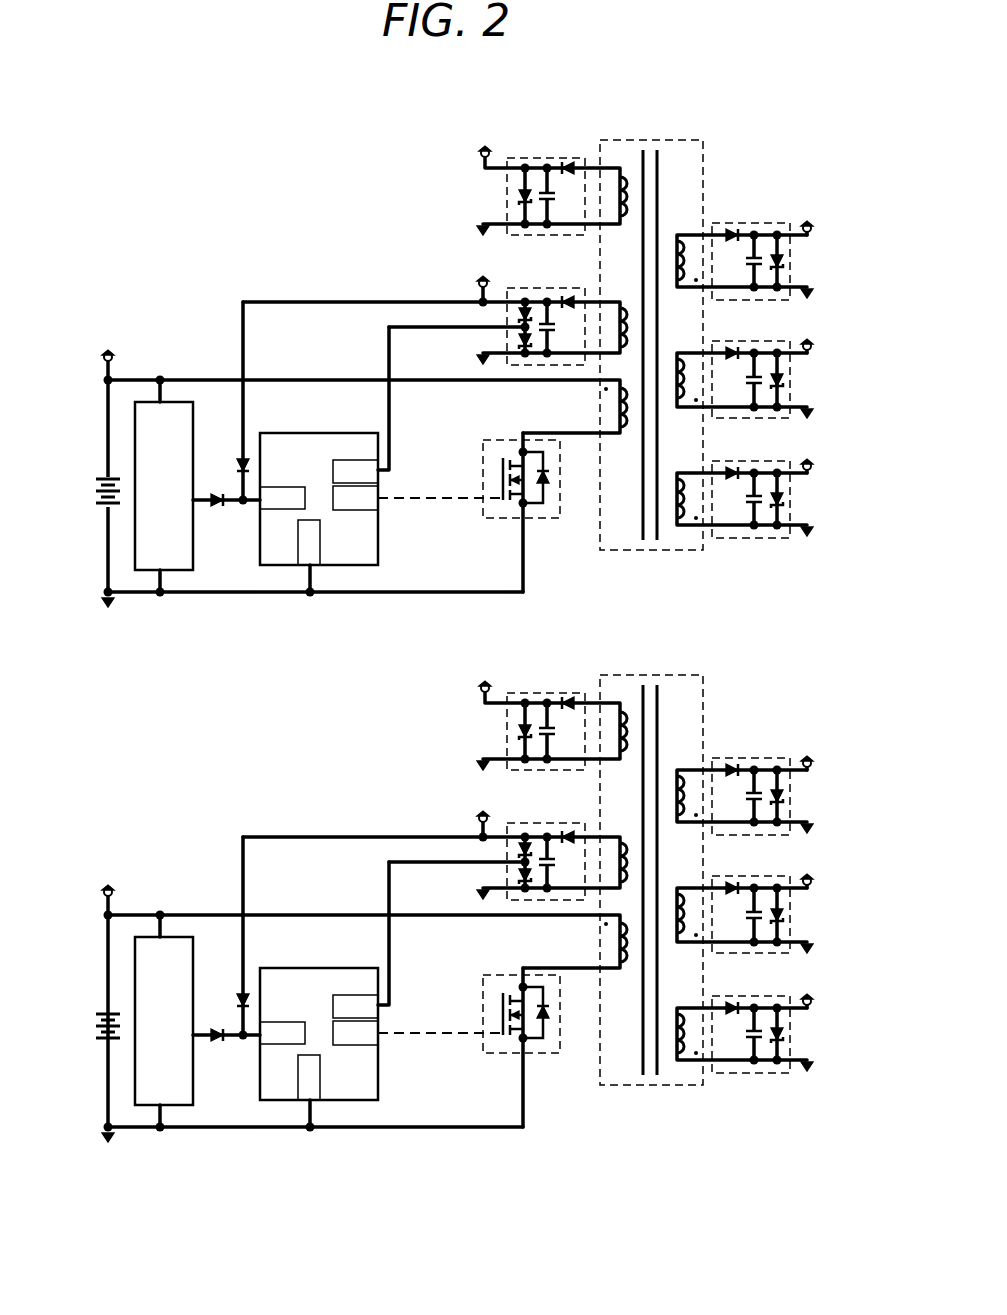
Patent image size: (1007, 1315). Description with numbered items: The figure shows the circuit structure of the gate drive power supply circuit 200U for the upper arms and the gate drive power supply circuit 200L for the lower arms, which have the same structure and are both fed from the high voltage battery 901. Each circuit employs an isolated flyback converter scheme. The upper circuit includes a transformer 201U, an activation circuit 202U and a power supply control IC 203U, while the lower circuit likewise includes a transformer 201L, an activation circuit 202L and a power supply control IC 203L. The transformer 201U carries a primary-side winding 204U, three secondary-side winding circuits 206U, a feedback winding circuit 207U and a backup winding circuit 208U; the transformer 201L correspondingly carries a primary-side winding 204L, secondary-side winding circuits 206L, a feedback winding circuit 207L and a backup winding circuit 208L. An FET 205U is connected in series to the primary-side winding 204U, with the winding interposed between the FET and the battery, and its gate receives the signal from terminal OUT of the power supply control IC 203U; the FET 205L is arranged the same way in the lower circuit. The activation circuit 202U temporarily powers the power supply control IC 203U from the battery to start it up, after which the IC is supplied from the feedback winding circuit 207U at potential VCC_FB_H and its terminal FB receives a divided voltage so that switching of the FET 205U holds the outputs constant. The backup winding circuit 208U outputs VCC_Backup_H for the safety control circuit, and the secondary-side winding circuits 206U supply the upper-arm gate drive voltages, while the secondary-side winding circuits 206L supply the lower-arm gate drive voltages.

The gate drive power supply circuit for the upper arms 200U is at (193, 197).
The gate drive power supply circuit for the lower arms 200L is at (193, 732).
The transformer 201U is at (703, 172).
The transformer 201L is at (703, 707).
The activation circuit 202U is at (195, 560).
The activation circuit 202L is at (195, 1095).
The power supply control IC 203U is at (378, 562).
The power supply control IC 203L is at (378, 1097).
The primary-side winding 204U is at (610, 442).
The primary-side winding 204L is at (610, 977).
The FET 205U is at (540, 518).
The FET 205L is at (540, 1053).
The secondary-side winding circuits 206U is at (728, 300).
The secondary-side winding circuits 206L is at (728, 835).
The feedback winding circuit 207U is at (514, 288).
The feedback winding circuit 207L is at (514, 823).
The backup winding circuit 208U is at (514, 158).
The backup winding circuit 208L is at (514, 693).
The high voltage battery 901 is at (88, 750).